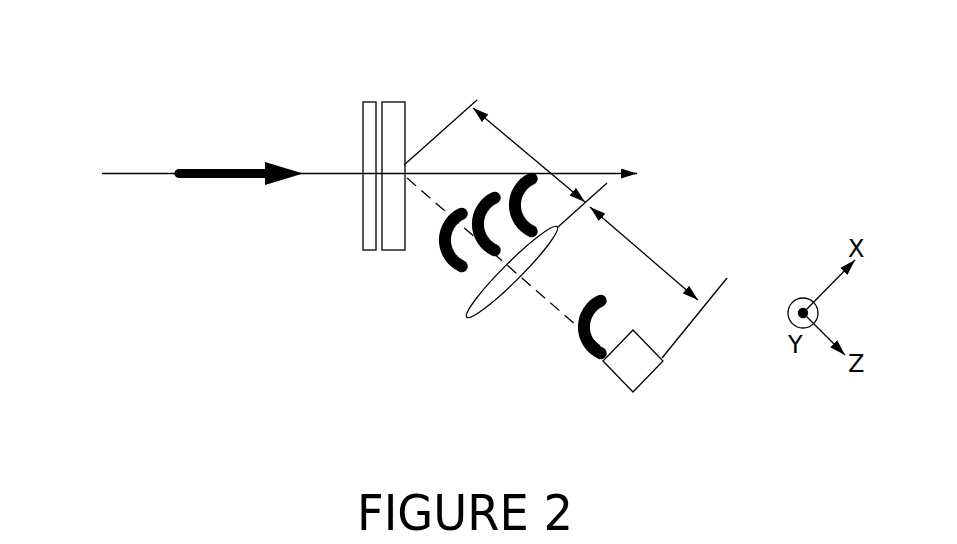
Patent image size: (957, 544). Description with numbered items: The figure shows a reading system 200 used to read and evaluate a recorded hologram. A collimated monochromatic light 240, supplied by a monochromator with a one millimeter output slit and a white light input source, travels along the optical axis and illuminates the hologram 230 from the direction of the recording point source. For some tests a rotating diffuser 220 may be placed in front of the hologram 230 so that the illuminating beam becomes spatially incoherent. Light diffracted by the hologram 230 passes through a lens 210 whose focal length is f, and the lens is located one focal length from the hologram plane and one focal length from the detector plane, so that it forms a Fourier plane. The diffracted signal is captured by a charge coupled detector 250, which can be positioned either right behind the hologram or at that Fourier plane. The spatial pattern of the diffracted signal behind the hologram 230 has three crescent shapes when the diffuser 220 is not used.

The reading system 200 is at (322, 52).
The lens 210 is at (508, 291).
The rotating diffuser 220 is at (363, 230).
The hologram 230 is at (395, 101).
The collimated monochromatic light 240 is at (231, 170).
The charge coupled detector (CCD) 250 is at (647, 377).